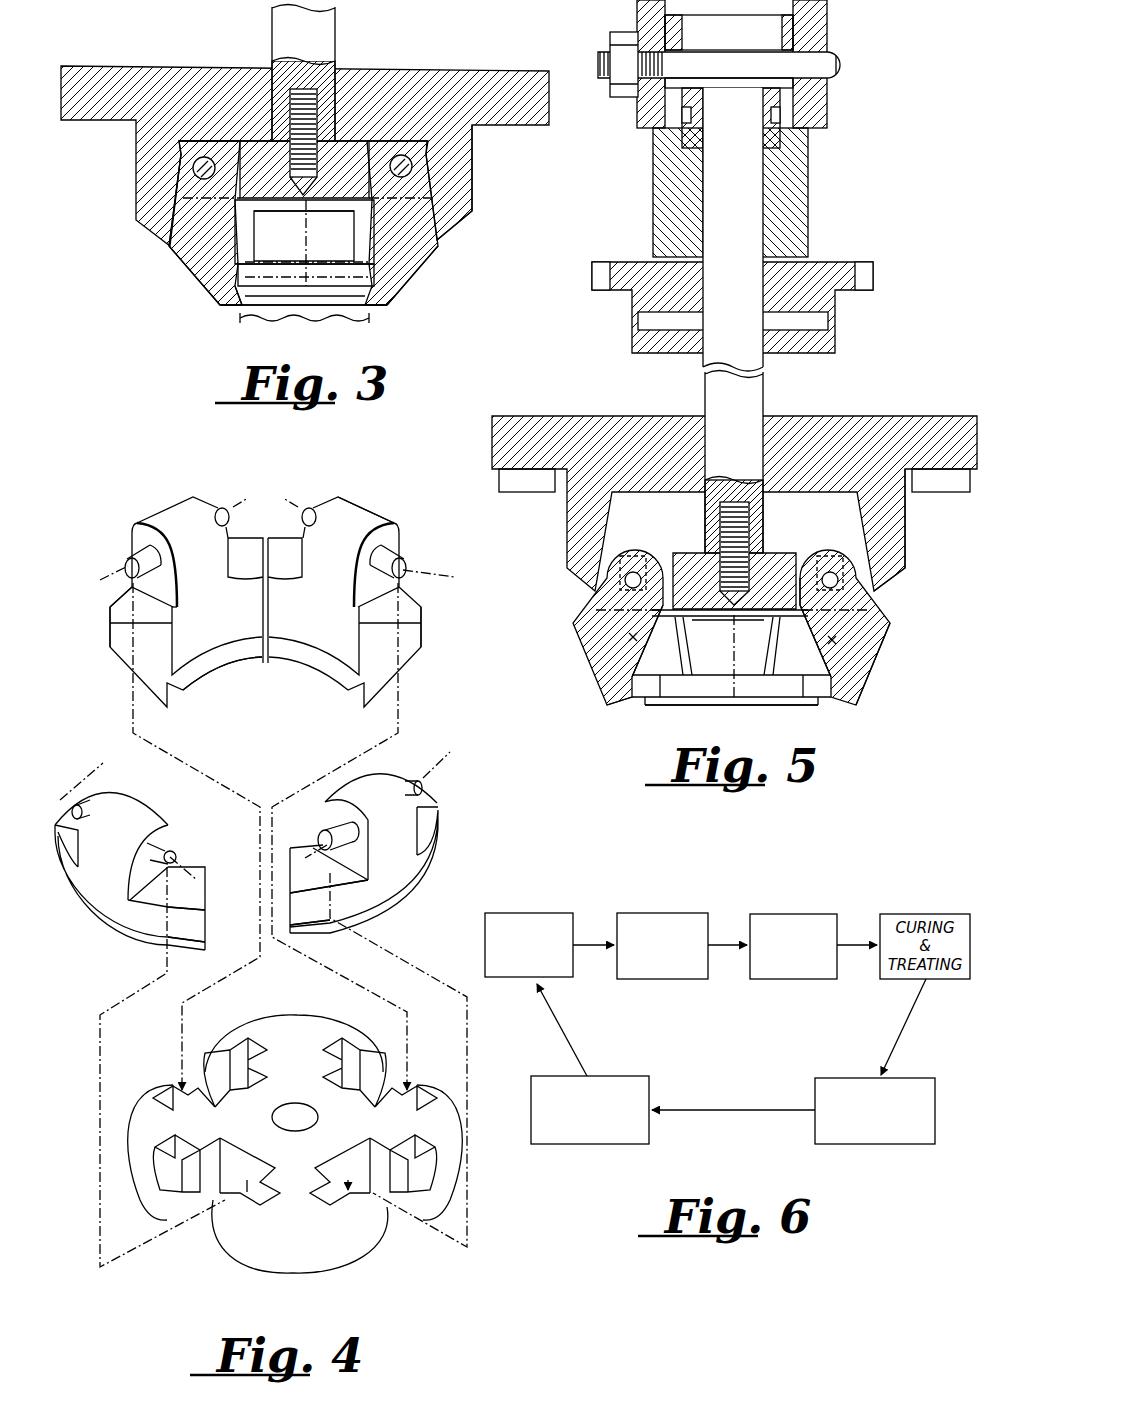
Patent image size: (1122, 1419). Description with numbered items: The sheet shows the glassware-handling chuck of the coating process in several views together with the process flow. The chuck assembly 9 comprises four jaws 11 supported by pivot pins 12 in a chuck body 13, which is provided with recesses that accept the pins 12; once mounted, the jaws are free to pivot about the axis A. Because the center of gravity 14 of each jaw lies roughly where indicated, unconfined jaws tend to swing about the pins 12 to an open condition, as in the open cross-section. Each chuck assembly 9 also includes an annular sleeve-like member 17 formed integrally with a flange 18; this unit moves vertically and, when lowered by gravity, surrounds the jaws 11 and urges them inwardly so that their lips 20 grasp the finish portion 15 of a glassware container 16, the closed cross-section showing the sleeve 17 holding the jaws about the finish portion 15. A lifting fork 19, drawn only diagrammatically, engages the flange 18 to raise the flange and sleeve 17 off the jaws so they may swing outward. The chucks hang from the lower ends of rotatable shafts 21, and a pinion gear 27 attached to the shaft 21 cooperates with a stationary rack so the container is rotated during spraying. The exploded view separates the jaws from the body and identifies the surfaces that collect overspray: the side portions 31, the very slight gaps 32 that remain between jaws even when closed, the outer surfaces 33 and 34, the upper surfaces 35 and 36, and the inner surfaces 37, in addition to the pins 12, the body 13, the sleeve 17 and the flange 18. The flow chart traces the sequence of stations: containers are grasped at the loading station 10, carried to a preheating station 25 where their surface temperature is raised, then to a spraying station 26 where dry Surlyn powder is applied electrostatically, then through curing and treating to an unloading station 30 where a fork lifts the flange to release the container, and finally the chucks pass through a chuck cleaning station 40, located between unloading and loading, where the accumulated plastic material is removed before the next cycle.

In FIG. 3, the chuck assembly 9 is at (120, 284).
In FIG. 5, the chuck assembly 9 is at (565, 686).
In FIG. 6, the loading station 10 is at (561, 882).
In FIG. 3, the jaws 11 is at (417, 255).
In FIG. 5, the jaws 11 is at (589, 634).
In FIG. 4, the jaws 11 is at (110, 647).
In FIG. 3, the pivot pins 12 is at (410, 166).
In FIG. 5, the pivot pins 12 is at (633, 572).
In FIG. 4, the pivot pins 12 is at (312, 508).
In FIG. 3, the chuck body 13 is at (347, 154).
In FIG. 5, the chuck body 13 is at (779, 551).
In FIG. 4, the chuck body 13 is at (250, 1240).
In FIG. 3, the center of gravity 14 is at (419, 216).
In FIG. 5, the center of gravity 14 is at (838, 645).
In FIG. 3, the finish portion 15 is at (399, 296).
In FIG. 3, the glassware container 16 is at (288, 323).
In FIG. 3, the annular sleeve-like member 17 is at (474, 138).
In FIG. 5, the annular sleeve-like member 17 is at (890, 539).
In FIG. 3, the flange 18 is at (538, 107).
In FIG. 5, the flange 18 is at (734, 489).
In FIG. 5, the lifting fork 19 is at (518, 490).
In FIG. 3, the lips 20 is at (229, 286).
In FIG. 5, the lips 20 is at (643, 705).
In FIG. 4, the lips 20 is at (287, 657).
In FIG. 3, the shafts 21 is at (320, 29).
In FIG. 5, the shafts 21 is at (765, 369).
In FIG. 6, the preheating station 25 is at (664, 902).
In FIG. 6, the spraying station 26 is at (808, 901).
In FIG. 5, the pinion gear 27 is at (848, 267).
In FIG. 6, the unloading station 30 is at (855, 1151).
In FIG. 5, the side portions 31 is at (672, 663).
In FIG. 4, the side portions 31 is at (122, 657).
In FIG. 3, the gaps 32 is at (336, 241).
In FIG. 4, the gaps 32 is at (265, 536).
In FIG. 3, the outer surface 33 is at (176, 257).
In FIG. 5, the outer surface 33 is at (872, 685).
In FIG. 4, the outer surface 33 is at (197, 947).
In FIG. 3, the outer surface 34 is at (172, 221).
In FIG. 5, the outer surface 34 is at (855, 613).
In FIG. 4, the outer surface 34 is at (195, 927).
In FIG. 4, the upper surface 35 is at (396, 535).
In FIG. 4, the upper surface 36 is at (421, 610).
In FIG. 3, the inner surfaces 37 is at (304, 221).
In FIG. 5, the inner surfaces 37 is at (805, 707).
In FIG. 4, the inner surfaces 37 is at (261, 617).
In FIG. 6, the chuck cleaning station 40 is at (603, 1151).
In FIG. 3, the pivot axis A is at (197, 175).
In FIG. 5, the pivot axis A is at (845, 582).
In FIG. 4, the pivot axis A is at (468, 748).